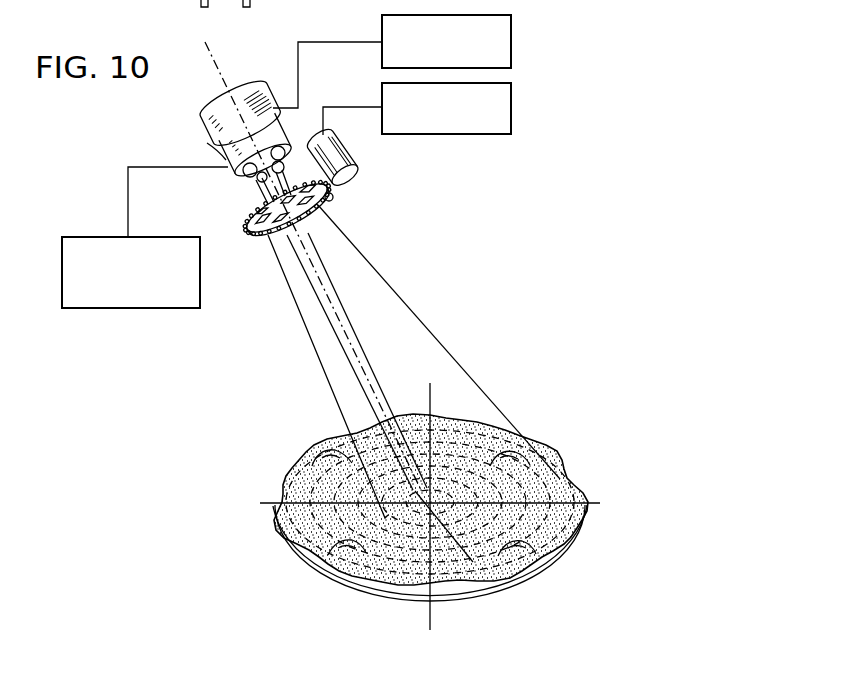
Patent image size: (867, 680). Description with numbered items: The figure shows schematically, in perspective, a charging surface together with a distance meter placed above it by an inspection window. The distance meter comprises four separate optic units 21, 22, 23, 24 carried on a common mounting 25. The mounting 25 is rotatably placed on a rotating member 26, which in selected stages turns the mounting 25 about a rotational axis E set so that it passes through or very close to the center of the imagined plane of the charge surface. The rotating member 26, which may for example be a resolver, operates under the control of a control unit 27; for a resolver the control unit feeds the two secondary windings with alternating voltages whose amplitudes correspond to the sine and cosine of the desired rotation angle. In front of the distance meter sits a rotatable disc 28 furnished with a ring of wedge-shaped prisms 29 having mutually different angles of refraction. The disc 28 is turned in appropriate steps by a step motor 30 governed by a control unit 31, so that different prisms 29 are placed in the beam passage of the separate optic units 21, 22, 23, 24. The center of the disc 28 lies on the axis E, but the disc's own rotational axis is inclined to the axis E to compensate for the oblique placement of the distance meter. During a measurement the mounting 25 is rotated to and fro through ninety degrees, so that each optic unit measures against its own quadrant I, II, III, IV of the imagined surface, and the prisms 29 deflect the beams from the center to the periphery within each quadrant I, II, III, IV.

The rotational axis E is at (214, 55).
The optic unit 21 is at (276, 110).
The optic unit 22 is at (291, 158).
The optic unit 23 is at (258, 186).
The optic unit 24 is at (244, 175).
The mounting 25 is at (92, 236).
The rotating member 26 is at (207, 143).
The control unit 27 is at (506, 35).
The rotatable disc 28 is at (262, 236).
The wedge-shaped prisms 29 is at (333, 198).
The step motor 30 is at (358, 150).
The control unit 31 is at (510, 113).
The quadrant I is at (537, 460).
The quadrant II is at (311, 447).
The quadrant III is at (347, 560).
The quadrant IV is at (510, 560).